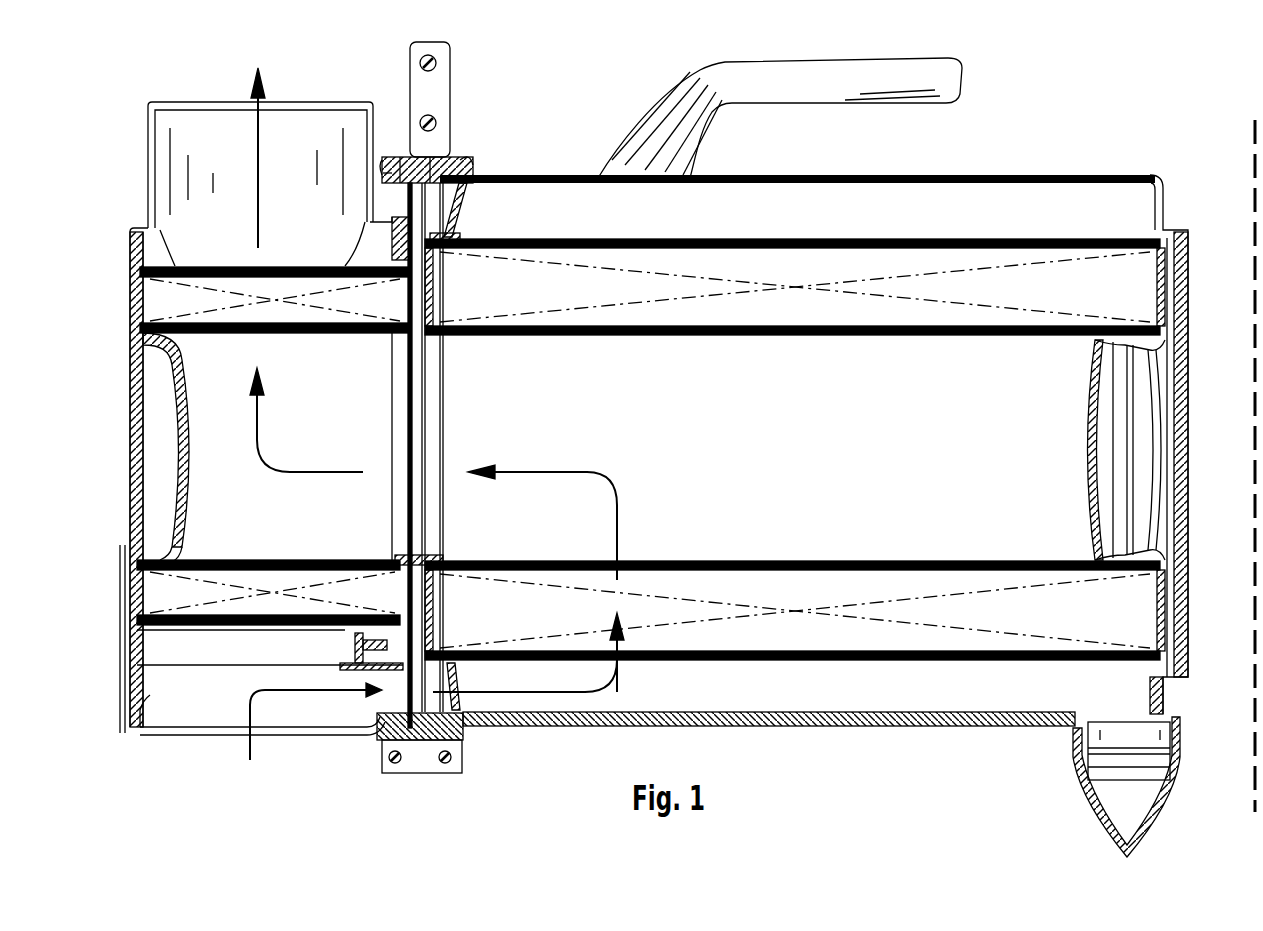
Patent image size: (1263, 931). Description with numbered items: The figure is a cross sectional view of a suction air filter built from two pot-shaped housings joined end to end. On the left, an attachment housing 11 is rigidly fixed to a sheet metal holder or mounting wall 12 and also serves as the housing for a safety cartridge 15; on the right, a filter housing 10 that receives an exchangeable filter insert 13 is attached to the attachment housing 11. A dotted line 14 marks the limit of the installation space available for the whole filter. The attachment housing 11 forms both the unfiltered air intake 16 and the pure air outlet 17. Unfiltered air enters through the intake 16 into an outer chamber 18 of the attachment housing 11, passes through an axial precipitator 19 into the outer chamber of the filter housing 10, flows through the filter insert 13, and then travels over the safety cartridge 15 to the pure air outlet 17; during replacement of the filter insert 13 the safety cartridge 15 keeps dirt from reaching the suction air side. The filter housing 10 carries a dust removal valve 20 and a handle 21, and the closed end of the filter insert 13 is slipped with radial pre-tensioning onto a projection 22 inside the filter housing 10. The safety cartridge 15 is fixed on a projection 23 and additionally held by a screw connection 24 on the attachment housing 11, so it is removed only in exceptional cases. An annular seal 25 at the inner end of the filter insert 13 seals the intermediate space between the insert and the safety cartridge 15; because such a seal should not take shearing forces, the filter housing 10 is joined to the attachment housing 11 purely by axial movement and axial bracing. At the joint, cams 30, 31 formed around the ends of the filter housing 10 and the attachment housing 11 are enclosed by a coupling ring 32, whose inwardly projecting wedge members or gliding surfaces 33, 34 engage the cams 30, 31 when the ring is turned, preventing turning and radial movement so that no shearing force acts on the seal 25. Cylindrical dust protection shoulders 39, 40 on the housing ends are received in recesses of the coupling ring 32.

The filter housing 10 is at (908, 180).
The attachment housing 11 is at (155, 250).
The mounting wall 12 is at (140, 660).
The filter insert 13 is at (866, 335).
The dotted line 14 is at (1253, 747).
The safety cartridge 15 is at (238, 608).
The unfiltered air intake 16 is at (283, 715).
The pure air outlet 17 is at (272, 127).
The outer chamber 18 is at (367, 694).
The axial precipitator 19 is at (472, 728).
The dust removal valve 20 is at (1083, 800).
The handle 21 is at (955, 85).
The projection 22 is at (1153, 350).
The projection 23 is at (143, 345).
The screw connection 24 is at (360, 645).
The annular seal 25 is at (408, 530).
The cam 30 is at (440, 152).
The cam 31 is at (400, 153).
The coupling ring 32 is at (462, 765).
The gliding surface 33 is at (460, 160).
The gliding surface 34 is at (387, 158).
The dust protection shoulder 39 is at (463, 187).
The dust protection shoulder 40 is at (383, 173).